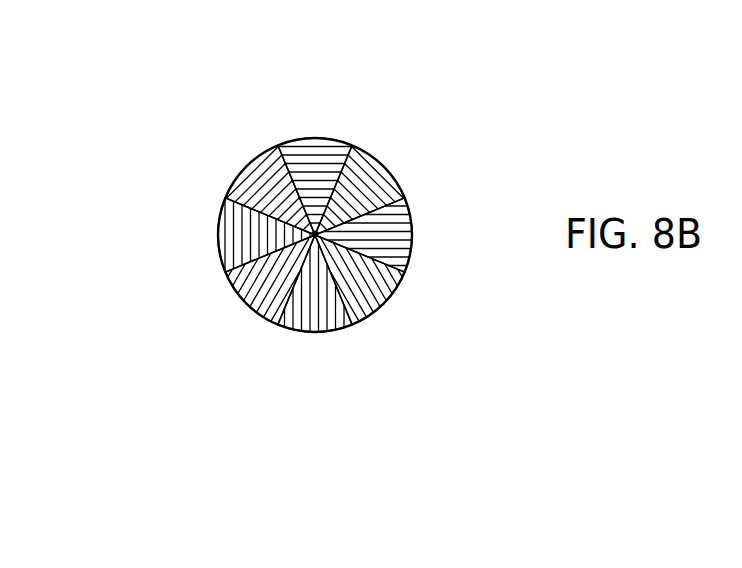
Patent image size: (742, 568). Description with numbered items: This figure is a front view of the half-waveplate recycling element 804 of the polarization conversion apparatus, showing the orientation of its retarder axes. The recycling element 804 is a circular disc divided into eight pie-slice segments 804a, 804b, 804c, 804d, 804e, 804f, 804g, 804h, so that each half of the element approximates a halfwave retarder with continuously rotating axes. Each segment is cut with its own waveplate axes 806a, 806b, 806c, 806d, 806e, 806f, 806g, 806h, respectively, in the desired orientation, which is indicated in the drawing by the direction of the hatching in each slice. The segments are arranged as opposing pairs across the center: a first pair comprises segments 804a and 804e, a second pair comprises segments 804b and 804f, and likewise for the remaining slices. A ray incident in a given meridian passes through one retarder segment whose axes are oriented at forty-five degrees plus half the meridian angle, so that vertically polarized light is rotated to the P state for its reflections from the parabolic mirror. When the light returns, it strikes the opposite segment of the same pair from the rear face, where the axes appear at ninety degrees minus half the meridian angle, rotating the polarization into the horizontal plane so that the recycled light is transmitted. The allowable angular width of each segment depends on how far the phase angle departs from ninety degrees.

The recycling element 804 is at (133, 132).
The segment 804a is at (313, 138).
The segment 804b is at (247, 168).
The segment 804c is at (218, 235).
The segment 804d is at (248, 305).
The segment 804e is at (318, 330).
The segment 804f is at (368, 258).
The segment 804g is at (380, 233).
The segment 804h is at (382, 165).
The axes 806a is at (318, 170).
The axes 806b is at (273, 193).
The axes 806c is at (222, 230).
The axes 806d is at (245, 295).
The axes 806e is at (317, 310).
The axes 806f is at (362, 300).
The axes 806g is at (407, 248).
The axes 806h is at (372, 193).